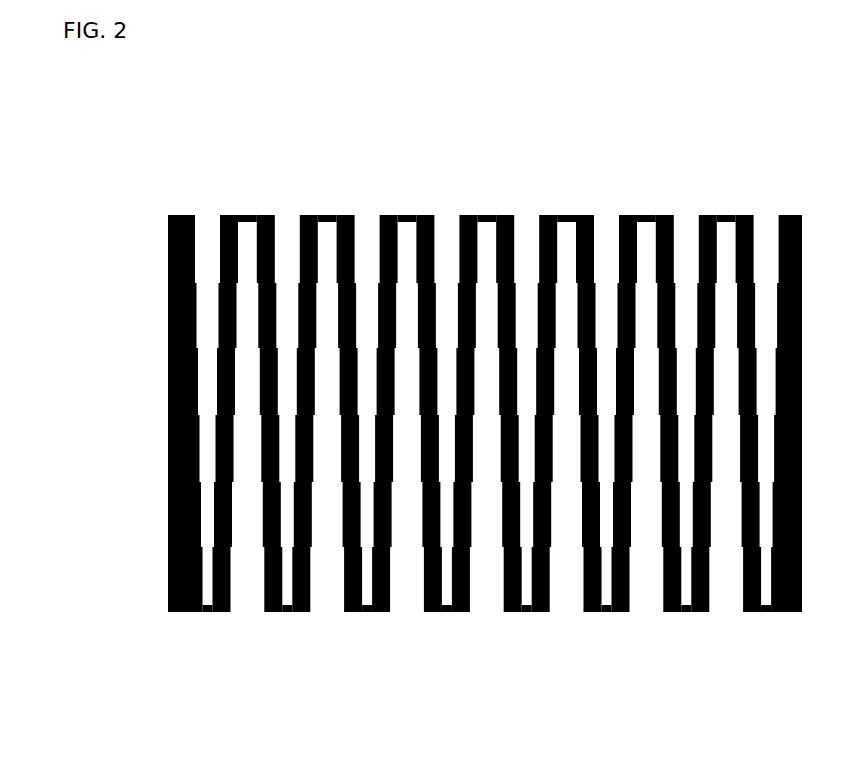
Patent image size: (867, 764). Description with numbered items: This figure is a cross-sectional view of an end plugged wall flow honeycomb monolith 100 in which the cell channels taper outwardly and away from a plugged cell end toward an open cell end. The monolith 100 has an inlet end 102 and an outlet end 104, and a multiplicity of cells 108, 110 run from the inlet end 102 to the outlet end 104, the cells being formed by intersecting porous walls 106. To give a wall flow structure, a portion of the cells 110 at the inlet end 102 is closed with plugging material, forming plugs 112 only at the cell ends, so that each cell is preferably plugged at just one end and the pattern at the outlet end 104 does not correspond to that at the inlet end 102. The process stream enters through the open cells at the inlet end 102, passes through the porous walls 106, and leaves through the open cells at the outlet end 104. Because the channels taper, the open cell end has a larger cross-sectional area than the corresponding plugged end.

The honeycomb monolith 100 is at (116, 183).
The inlet end 102 is at (681, 189).
The outlet end 104 is at (648, 641).
The porous walls 106 is at (273, 232).
The cells 108 is at (525, 207).
The plugged cells 110 is at (402, 207).
The plugs 112 is at (277, 621).